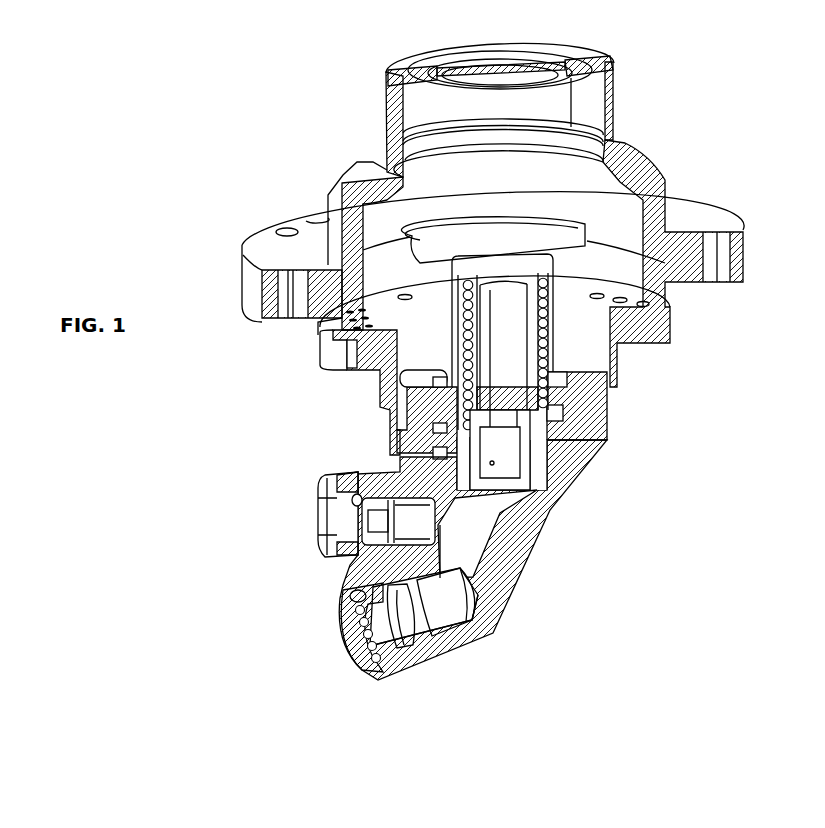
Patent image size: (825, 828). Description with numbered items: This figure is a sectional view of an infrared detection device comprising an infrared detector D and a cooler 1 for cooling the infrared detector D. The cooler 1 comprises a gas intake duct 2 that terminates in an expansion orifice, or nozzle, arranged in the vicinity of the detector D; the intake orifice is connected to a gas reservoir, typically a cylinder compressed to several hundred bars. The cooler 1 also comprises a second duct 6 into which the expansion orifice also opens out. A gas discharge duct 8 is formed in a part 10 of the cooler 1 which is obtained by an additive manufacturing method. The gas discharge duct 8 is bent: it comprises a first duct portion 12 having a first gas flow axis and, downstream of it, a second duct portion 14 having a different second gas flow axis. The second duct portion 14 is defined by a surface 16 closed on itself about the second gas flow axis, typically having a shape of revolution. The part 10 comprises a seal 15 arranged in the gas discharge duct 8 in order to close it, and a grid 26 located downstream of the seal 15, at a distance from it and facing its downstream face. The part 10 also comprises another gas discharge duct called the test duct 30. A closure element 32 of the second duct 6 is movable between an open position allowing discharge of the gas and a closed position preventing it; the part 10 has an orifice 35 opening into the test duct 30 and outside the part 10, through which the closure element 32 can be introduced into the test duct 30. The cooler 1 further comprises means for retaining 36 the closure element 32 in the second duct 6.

The cooler 1 is at (732, 152).
The gas intake duct 2 is at (543, 350).
The second duct 6 is at (543, 282).
The gas discharge duct 8 is at (447, 613).
The part 10 is at (553, 506).
The first duct portion 12 is at (472, 535).
The second duct portion 14 is at (433, 623).
The seal 15 is at (398, 614).
The surface 16 is at (363, 596).
The grid 26 is at (353, 627).
The test duct 30 is at (445, 530).
The closure element 32 is at (415, 525).
The orifice 35 is at (335, 512).
The means for retaining 36 is at (362, 496).
The infrared detector D is at (453, 237).